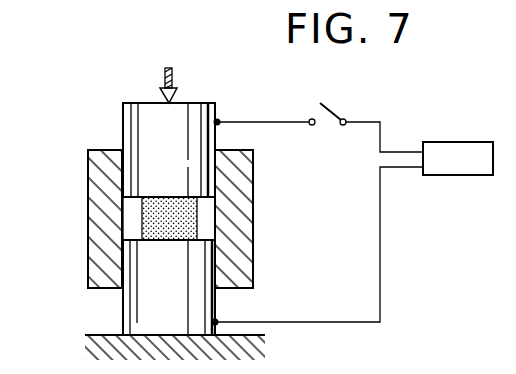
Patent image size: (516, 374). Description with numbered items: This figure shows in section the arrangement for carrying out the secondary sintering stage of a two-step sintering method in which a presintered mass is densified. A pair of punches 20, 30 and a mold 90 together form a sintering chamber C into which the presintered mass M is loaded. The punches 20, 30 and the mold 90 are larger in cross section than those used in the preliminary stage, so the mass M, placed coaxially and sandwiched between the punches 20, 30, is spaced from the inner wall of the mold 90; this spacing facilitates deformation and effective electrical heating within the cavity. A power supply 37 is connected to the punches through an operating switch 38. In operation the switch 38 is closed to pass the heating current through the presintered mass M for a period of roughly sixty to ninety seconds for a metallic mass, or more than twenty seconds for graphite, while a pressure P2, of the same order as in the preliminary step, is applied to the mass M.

The punch 20 is at (123, 128).
The punch 30 is at (123, 303).
The mold 90 is at (90, 185).
The presintered mass M is at (166, 199).
The sintering chamber C is at (210, 223).
The pressure P2 is at (175, 78).
The power supply 37 is at (447, 142).
The operating switch 38 is at (327, 127).